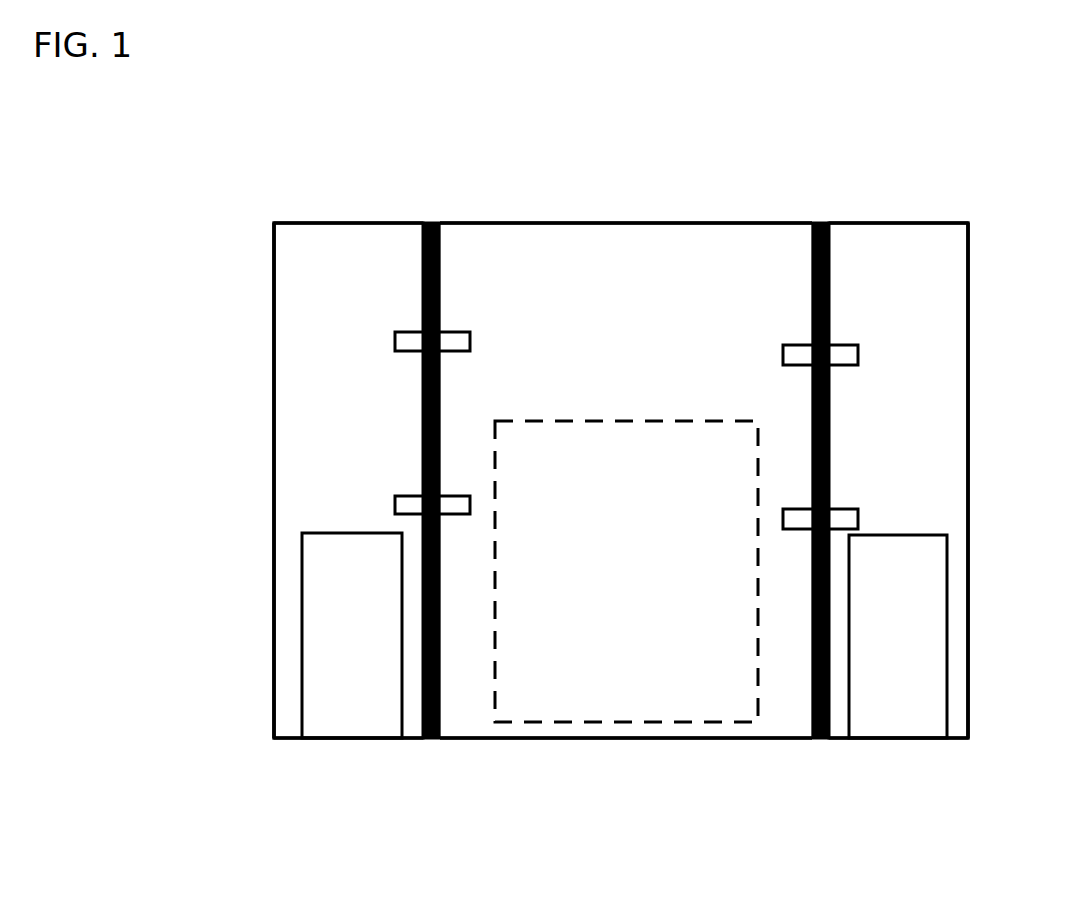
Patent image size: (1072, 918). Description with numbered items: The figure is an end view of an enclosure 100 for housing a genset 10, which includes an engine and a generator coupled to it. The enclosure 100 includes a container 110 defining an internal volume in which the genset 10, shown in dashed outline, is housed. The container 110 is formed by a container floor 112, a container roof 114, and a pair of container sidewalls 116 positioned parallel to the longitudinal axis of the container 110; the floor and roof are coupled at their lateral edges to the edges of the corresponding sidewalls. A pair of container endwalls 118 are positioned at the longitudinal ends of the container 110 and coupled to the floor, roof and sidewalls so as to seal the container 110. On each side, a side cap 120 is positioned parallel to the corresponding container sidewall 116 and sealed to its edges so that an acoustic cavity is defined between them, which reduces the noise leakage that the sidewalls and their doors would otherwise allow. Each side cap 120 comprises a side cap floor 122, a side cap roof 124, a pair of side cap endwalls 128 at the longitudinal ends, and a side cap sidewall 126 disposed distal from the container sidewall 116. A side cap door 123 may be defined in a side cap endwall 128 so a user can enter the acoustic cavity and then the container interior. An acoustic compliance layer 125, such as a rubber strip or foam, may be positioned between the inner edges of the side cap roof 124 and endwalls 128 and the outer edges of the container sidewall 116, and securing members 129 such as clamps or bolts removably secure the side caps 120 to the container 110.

The enclosure 100 is at (407, 114).
The genset 10 is at (615, 718).
The container 110 is at (629, 212).
The container floor 112 is at (783, 740).
The container roof 114 is at (797, 222).
The container sidewalls 116 is at (447, 222).
The container endwalls 118 is at (465, 718).
The side cap 120 is at (306, 212).
The side cap floor 122 is at (290, 740).
The side cap door 123 is at (355, 712).
The side cap roof 124 is at (373, 222).
The acoustic compliance layer 125 is at (430, 740).
The side cap sidewall 126 is at (272, 443).
The side cap endwalls 128 is at (288, 327).
The securing members 129 is at (405, 345).